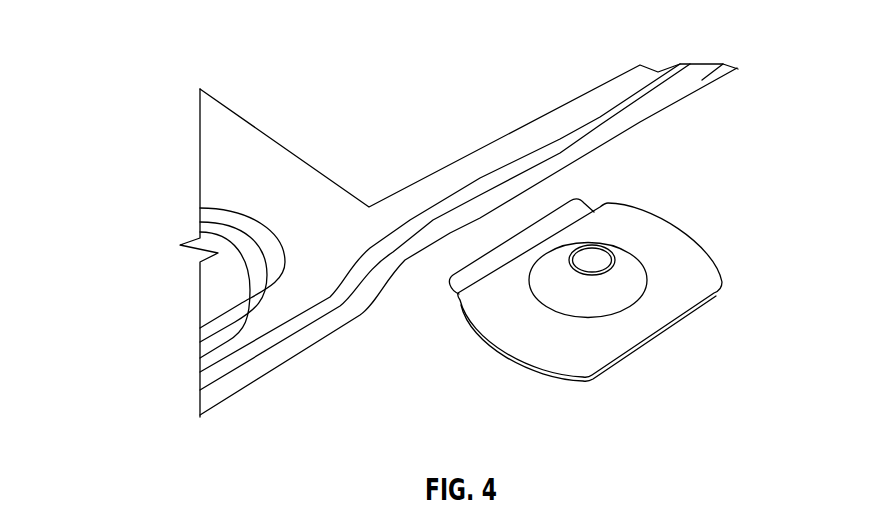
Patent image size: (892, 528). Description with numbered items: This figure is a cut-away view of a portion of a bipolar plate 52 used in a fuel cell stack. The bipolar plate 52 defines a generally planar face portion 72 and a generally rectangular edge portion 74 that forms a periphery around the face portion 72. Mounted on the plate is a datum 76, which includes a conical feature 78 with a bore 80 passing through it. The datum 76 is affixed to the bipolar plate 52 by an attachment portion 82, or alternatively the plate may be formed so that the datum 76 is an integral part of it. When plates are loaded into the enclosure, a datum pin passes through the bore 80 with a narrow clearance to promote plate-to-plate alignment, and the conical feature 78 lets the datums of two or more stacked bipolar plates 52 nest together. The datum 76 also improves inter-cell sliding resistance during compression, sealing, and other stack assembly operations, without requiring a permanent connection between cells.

The bipolar plate 52 is at (151, 39).
The face portion 72 is at (263, 148).
The edge portion 74 is at (315, 337).
The datum 76 is at (699, 227).
The conical feature 78 is at (630, 295).
The bore 80 is at (586, 256).
The attachment portion 82 is at (580, 216).